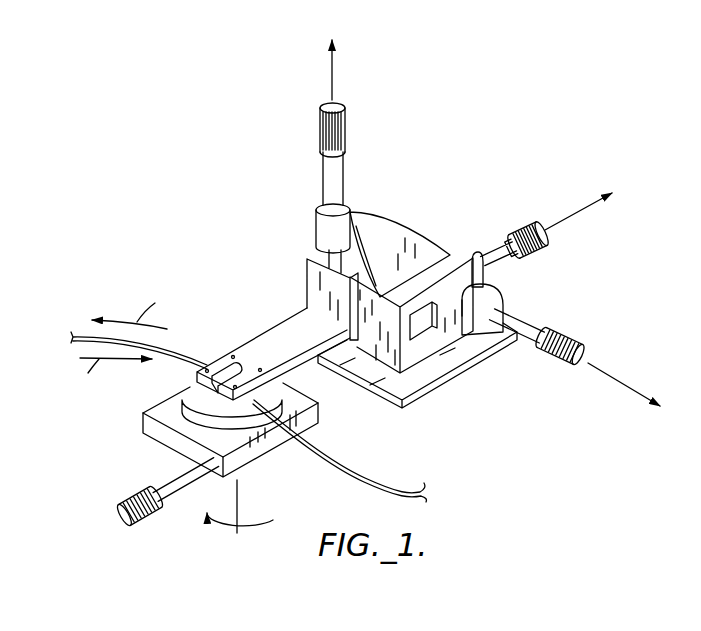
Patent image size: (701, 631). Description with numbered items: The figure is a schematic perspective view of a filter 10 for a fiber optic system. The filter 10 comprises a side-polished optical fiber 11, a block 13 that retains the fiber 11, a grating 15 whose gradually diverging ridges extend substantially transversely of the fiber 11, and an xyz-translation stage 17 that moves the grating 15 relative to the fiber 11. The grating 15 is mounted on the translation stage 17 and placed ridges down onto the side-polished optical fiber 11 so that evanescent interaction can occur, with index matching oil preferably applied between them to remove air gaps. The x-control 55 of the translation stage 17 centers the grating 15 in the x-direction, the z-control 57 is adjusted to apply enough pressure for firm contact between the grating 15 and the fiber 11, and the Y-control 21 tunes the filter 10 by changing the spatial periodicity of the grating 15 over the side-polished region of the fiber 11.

The filter 10 is at (145, 165).
The side-polished optical fiber 11 is at (372, 473).
The block 13 is at (185, 428).
The grating 15 is at (198, 412).
The translation stage 17 is at (397, 207).
The Y-control 21 is at (563, 221).
The x-control 55 is at (604, 371).
The z-control 57 is at (335, 74).